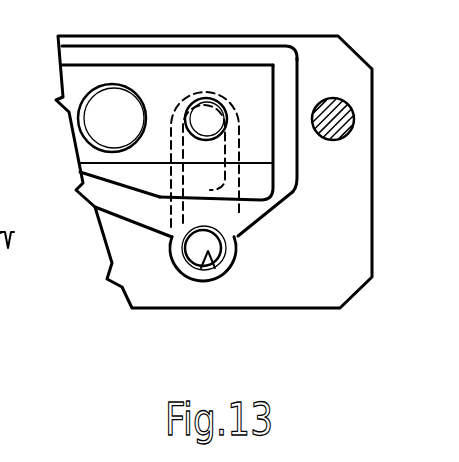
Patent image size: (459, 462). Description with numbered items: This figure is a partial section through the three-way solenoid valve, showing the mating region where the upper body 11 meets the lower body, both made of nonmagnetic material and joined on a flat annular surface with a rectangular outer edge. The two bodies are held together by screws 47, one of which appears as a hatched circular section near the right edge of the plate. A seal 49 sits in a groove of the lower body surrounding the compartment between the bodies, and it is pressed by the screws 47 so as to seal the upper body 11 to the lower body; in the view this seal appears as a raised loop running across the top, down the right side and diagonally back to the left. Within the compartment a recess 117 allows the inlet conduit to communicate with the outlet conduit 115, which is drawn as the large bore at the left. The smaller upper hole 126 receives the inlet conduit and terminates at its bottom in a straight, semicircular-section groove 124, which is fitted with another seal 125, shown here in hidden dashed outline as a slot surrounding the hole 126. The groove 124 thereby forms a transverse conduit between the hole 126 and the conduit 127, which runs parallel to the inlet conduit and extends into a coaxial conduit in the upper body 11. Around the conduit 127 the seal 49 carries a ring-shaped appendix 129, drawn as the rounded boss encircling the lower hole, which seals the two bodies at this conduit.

The upper body 11 is at (303, 290).
The screw 47 is at (354, 126).
The seal 49 is at (105, 193).
The outlet conduit 115 is at (97, 117).
The recess 117 is at (95, 68).
The groove 124 is at (265, 222).
The seal 125 is at (252, 127).
The hole 126 is at (198, 108).
The conduit 127 is at (217, 272).
The ring-shaped appendix 129 is at (181, 268).